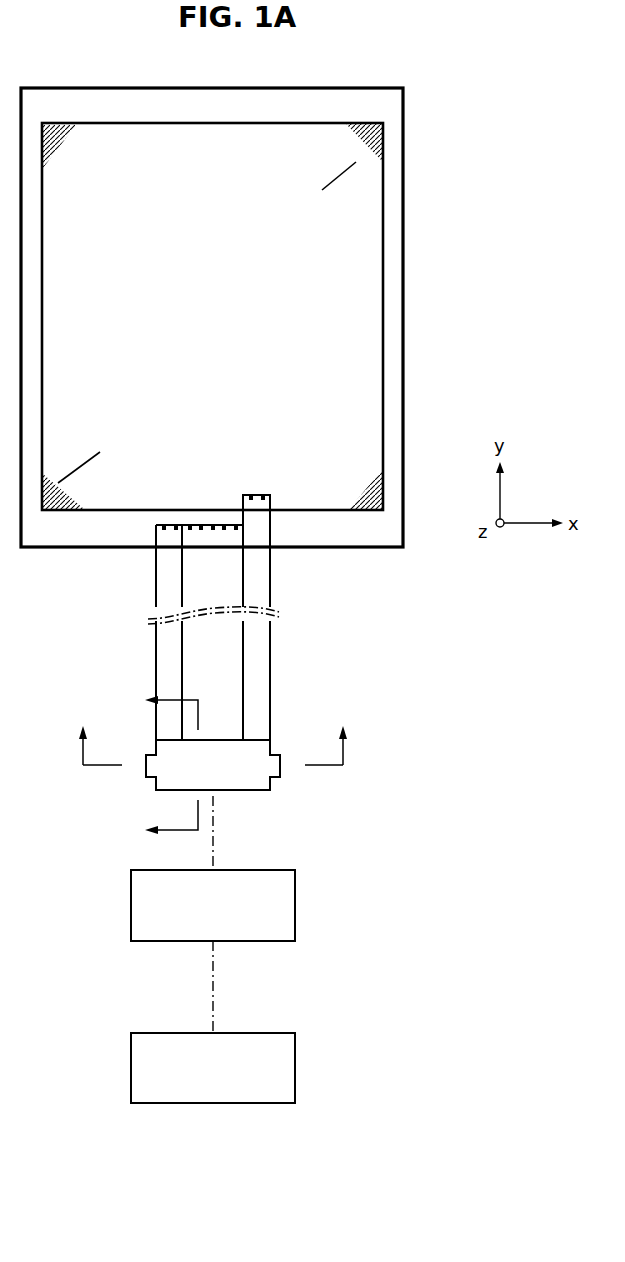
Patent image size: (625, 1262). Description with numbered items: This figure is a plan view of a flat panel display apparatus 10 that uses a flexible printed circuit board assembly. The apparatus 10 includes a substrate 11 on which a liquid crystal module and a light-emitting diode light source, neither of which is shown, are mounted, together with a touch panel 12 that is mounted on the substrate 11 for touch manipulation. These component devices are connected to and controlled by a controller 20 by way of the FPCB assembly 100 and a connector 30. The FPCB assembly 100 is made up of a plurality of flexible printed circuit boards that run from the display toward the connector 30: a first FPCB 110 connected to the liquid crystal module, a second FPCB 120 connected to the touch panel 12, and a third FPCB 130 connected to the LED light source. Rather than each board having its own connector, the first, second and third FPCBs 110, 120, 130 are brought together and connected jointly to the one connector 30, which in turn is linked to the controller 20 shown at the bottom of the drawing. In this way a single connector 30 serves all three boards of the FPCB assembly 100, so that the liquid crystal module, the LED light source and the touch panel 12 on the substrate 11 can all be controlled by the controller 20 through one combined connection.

The flat panel display apparatus 10 is at (272, 317).
The substrate 11 is at (392, 369).
The touch panel 12 is at (368, 320).
The FPCB assembly 100 is at (257, 668).
The first FPCB 110 is at (200, 587).
The second FPCB 120 is at (263, 577).
The third FPCB 130 is at (156, 580).
The connector 30 is at (131, 903).
The controller 20 is at (131, 1066).